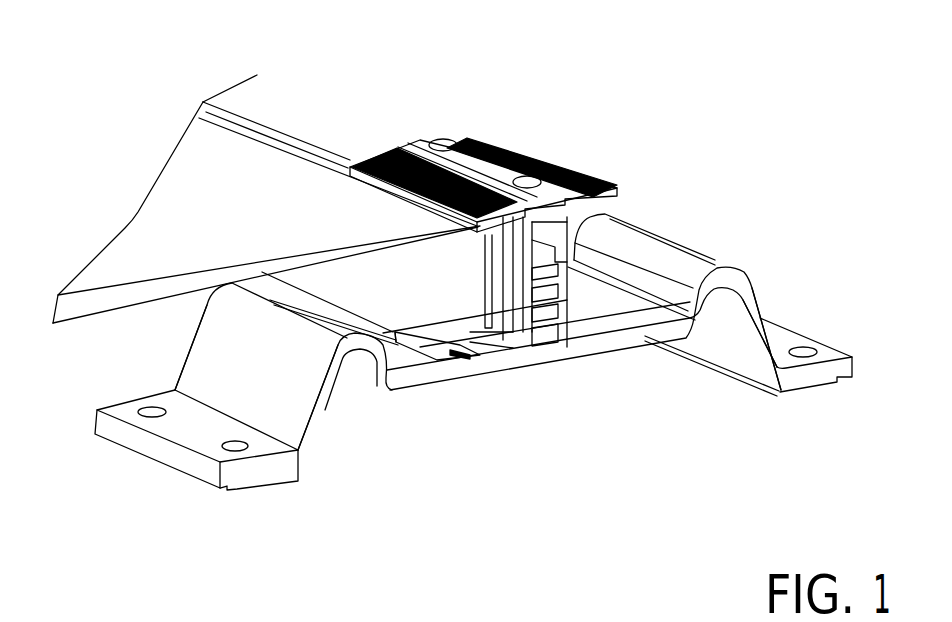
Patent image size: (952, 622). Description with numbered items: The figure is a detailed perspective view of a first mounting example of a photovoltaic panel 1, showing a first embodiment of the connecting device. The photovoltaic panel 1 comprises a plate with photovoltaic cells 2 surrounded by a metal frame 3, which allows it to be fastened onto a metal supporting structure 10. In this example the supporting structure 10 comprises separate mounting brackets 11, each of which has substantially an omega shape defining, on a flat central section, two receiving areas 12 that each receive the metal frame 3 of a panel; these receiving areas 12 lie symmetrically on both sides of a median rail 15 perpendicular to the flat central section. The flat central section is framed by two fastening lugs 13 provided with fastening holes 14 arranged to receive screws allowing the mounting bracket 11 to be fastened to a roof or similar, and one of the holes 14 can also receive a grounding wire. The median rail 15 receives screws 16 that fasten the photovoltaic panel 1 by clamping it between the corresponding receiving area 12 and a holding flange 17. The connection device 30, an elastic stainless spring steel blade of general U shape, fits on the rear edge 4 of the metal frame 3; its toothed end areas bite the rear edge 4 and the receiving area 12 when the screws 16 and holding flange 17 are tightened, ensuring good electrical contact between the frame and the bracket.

The photovoltaic panel 1 is at (164, 123).
The plate with photovoltaic cells 2 is at (145, 253).
The metal frame 3 is at (275, 118).
The rear edge of the metal frame 4 is at (227, 285).
The metal supporting structure 10 is at (718, 222).
The mounting bracket 11 is at (744, 262).
The receiving area 12 is at (617, 300).
The fastening lug 13 is at (121, 407).
The fastening hole 14 is at (226, 445).
The median rail 15 is at (537, 300).
The screws 16 is at (527, 178).
The holding flange 17 is at (548, 155).
The connection device 30 is at (452, 364).